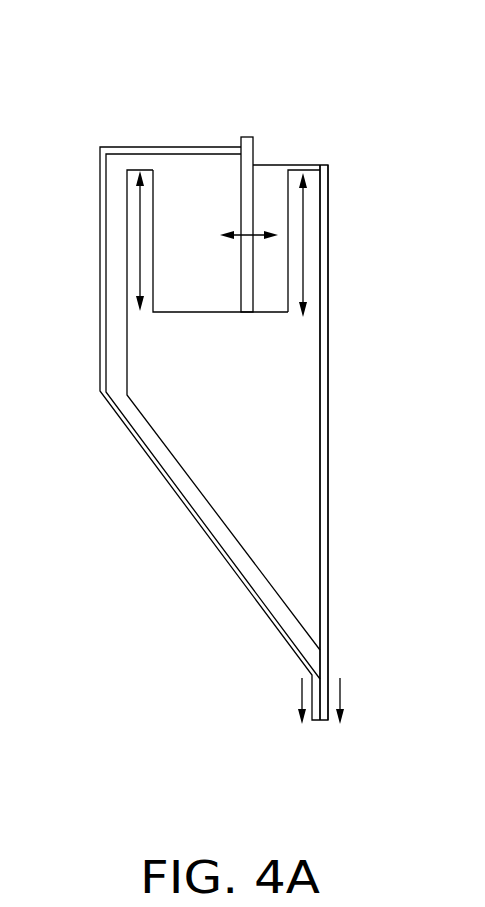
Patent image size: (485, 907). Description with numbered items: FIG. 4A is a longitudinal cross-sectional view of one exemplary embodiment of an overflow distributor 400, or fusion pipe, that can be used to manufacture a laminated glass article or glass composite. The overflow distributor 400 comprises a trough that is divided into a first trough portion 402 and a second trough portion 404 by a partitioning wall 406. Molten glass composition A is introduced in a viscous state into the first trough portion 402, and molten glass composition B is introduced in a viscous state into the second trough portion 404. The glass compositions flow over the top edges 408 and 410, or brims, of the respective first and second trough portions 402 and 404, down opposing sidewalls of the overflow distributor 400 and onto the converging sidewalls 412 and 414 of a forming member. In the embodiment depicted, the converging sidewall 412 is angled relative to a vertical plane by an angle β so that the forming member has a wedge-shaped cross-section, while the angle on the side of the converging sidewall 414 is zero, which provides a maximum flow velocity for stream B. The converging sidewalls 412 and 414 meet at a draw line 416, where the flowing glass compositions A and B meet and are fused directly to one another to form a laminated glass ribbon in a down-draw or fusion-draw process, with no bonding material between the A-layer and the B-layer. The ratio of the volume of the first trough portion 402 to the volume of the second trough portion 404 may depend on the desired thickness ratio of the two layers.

The overflow distributor 400 is at (252, 408).
The first trough portion 402 is at (153, 230).
The second trough portion 404 is at (290, 223).
The partitioning wall 406 is at (242, 143).
The top edge 408 is at (140, 171).
The top edge 410 is at (308, 170).
The converging sidewall 412 is at (253, 572).
The converging sidewall 414 is at (322, 508).
The draw line 416 is at (321, 645).